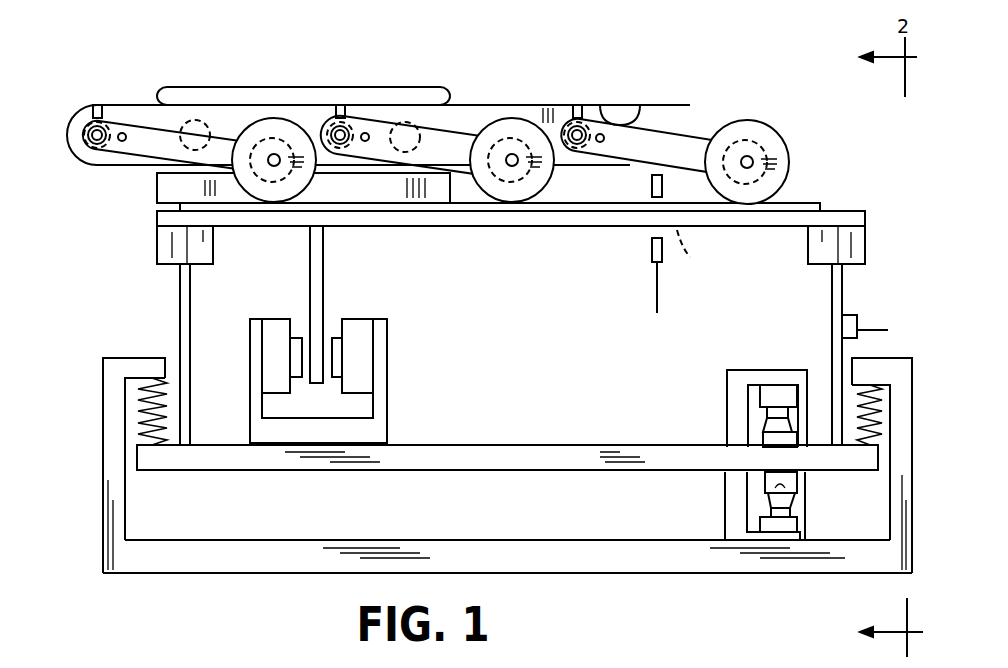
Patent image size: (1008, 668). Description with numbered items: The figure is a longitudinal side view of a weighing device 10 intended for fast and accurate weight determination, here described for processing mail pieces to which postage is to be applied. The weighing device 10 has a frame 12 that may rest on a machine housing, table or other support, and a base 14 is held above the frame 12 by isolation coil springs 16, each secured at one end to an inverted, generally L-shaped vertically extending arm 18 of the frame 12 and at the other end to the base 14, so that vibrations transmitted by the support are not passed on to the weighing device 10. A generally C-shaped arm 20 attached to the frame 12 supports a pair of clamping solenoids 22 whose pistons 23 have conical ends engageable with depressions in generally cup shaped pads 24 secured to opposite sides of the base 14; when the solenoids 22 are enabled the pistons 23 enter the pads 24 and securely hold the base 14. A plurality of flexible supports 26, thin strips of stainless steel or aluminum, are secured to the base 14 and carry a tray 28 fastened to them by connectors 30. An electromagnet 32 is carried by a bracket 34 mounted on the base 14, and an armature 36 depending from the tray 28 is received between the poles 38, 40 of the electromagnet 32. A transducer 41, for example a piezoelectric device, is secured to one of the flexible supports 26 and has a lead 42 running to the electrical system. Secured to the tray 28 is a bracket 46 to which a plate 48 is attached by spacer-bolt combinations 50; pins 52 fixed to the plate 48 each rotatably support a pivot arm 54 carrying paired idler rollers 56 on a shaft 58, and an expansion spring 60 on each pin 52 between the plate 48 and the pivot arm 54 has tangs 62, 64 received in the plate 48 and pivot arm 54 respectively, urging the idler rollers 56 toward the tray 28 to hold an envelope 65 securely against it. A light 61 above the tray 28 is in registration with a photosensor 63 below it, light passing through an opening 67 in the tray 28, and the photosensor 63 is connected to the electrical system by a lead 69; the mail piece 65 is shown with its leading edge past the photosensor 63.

The weighing device 10 is at (785, 127).
The frame 12 is at (470, 538).
The base 14 is at (548, 445).
The isolation coil springs 16 is at (147, 400).
The vertically extending arms 18 is at (127, 357).
The C-shaped arm 20 is at (728, 383).
The clamping solenoids 22 is at (807, 383).
The pistons 23 is at (763, 420).
The cup shaped pads 24 is at (763, 440).
The flexible supports 26 is at (178, 308).
The tray 28 is at (563, 230).
The connectors 30 is at (157, 248).
The electromagnet 32 is at (342, 334).
The bracket 34 is at (387, 423).
The armature 36 is at (325, 258).
The pole 38 is at (300, 337).
The pole 40 is at (337, 335).
The transducer 41 is at (853, 315).
The lead 42 is at (877, 330).
The bracket 46 is at (273, 87).
The plate 48 is at (508, 105).
The spacer-bolt combinations 50 is at (205, 123).
The pins 52 is at (95, 150).
The pivot arm 54 is at (170, 123).
The idler rollers 56 is at (260, 122).
The shaft 58 is at (276, 167).
The expansion spring 60 is at (72, 110).
The light 61 is at (663, 176).
The tang 62 is at (123, 133).
The photosensor 63 is at (648, 250).
The tang 64 is at (90, 107).
The envelope 65 is at (807, 202).
The opening 67 is at (699, 248).
The lead 69 is at (653, 288).